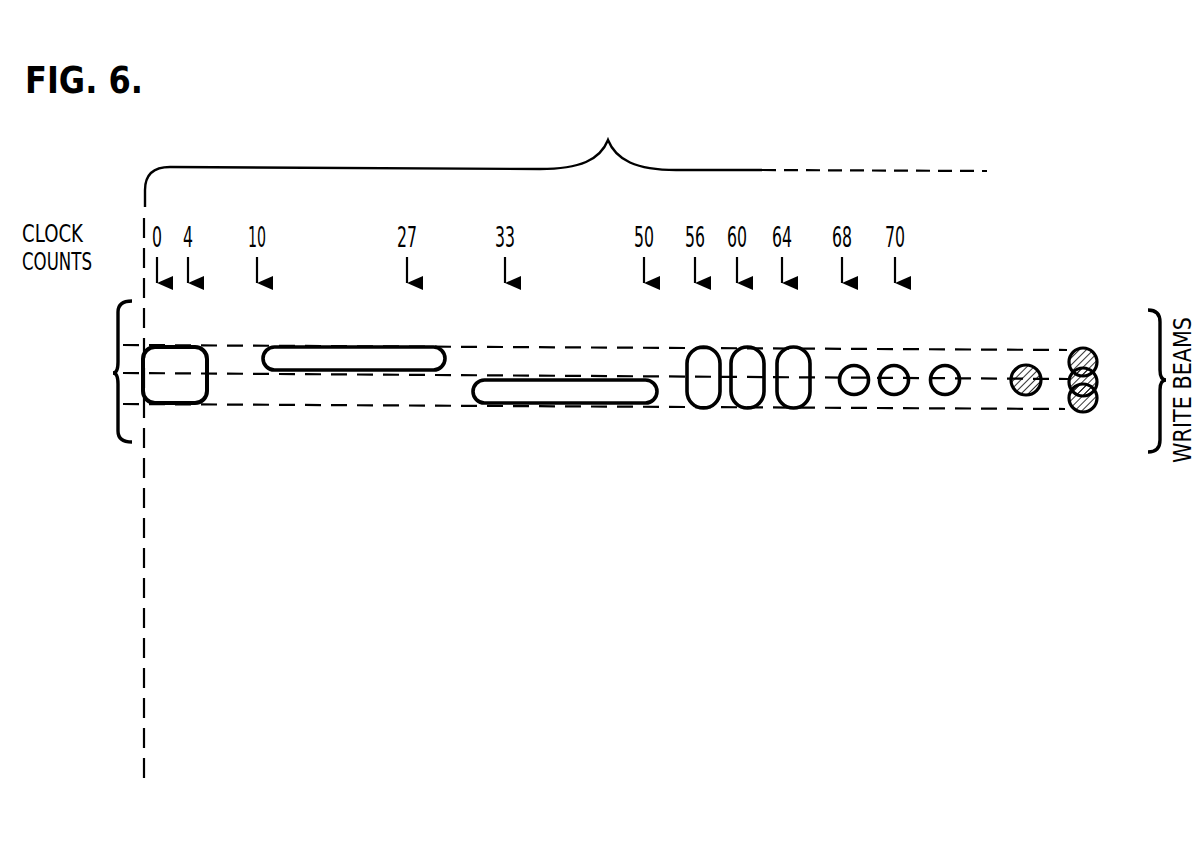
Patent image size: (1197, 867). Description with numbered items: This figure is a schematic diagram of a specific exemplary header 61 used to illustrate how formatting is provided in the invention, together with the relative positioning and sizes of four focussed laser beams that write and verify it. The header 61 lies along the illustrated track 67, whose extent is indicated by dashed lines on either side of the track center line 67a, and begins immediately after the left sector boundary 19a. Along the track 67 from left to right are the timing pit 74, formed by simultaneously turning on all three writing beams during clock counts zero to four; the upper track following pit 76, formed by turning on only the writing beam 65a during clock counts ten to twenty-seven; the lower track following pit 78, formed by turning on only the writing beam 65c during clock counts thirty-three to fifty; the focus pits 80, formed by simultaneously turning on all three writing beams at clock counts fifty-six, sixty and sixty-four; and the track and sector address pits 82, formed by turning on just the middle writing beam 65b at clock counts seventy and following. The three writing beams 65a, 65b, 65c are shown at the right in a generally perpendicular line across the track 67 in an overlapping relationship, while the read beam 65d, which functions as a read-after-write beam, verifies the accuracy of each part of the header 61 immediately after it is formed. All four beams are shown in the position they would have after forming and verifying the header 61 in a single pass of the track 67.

The header 61 is at (566, 148).
The sector boundary 19a is at (143, 600).
The track 67 is at (540, 371).
The track center line 67a is at (138, 374).
The timing pit 74 is at (178, 404).
The upper track following pit 76 is at (343, 347).
The lower track following pit 78 is at (565, 404).
The focus pits 80 is at (790, 408).
The track and sector address pits 82 is at (940, 395).
The read-after-write laser beam 65d is at (1098, 257).
The laser writing beam 65a is at (1094, 352).
The laser writing beam 65b is at (1097, 382).
The laser writing beam 65c is at (1094, 408).